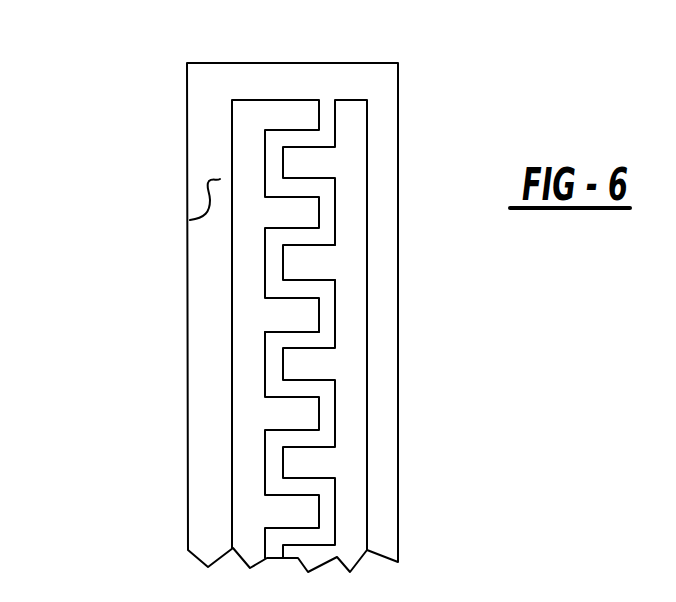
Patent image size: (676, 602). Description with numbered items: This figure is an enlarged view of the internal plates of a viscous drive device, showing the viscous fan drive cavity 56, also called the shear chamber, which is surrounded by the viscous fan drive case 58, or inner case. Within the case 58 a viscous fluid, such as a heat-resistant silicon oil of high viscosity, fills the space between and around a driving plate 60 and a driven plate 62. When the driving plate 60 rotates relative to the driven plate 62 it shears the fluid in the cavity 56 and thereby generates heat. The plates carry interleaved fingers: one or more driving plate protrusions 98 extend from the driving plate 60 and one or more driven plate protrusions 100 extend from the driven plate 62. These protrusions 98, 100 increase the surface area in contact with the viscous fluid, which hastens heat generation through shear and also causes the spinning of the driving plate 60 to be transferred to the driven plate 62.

The viscous fan drive case 58 is at (187, 63).
The viscous fan drive cavity 56 is at (190, 220).
The driving plate 60 is at (366, 178).
The driven plate 62 is at (233, 240).
The driving plate protrusions 98 is at (322, 282).
The driven plate protrusions 100 is at (277, 334).